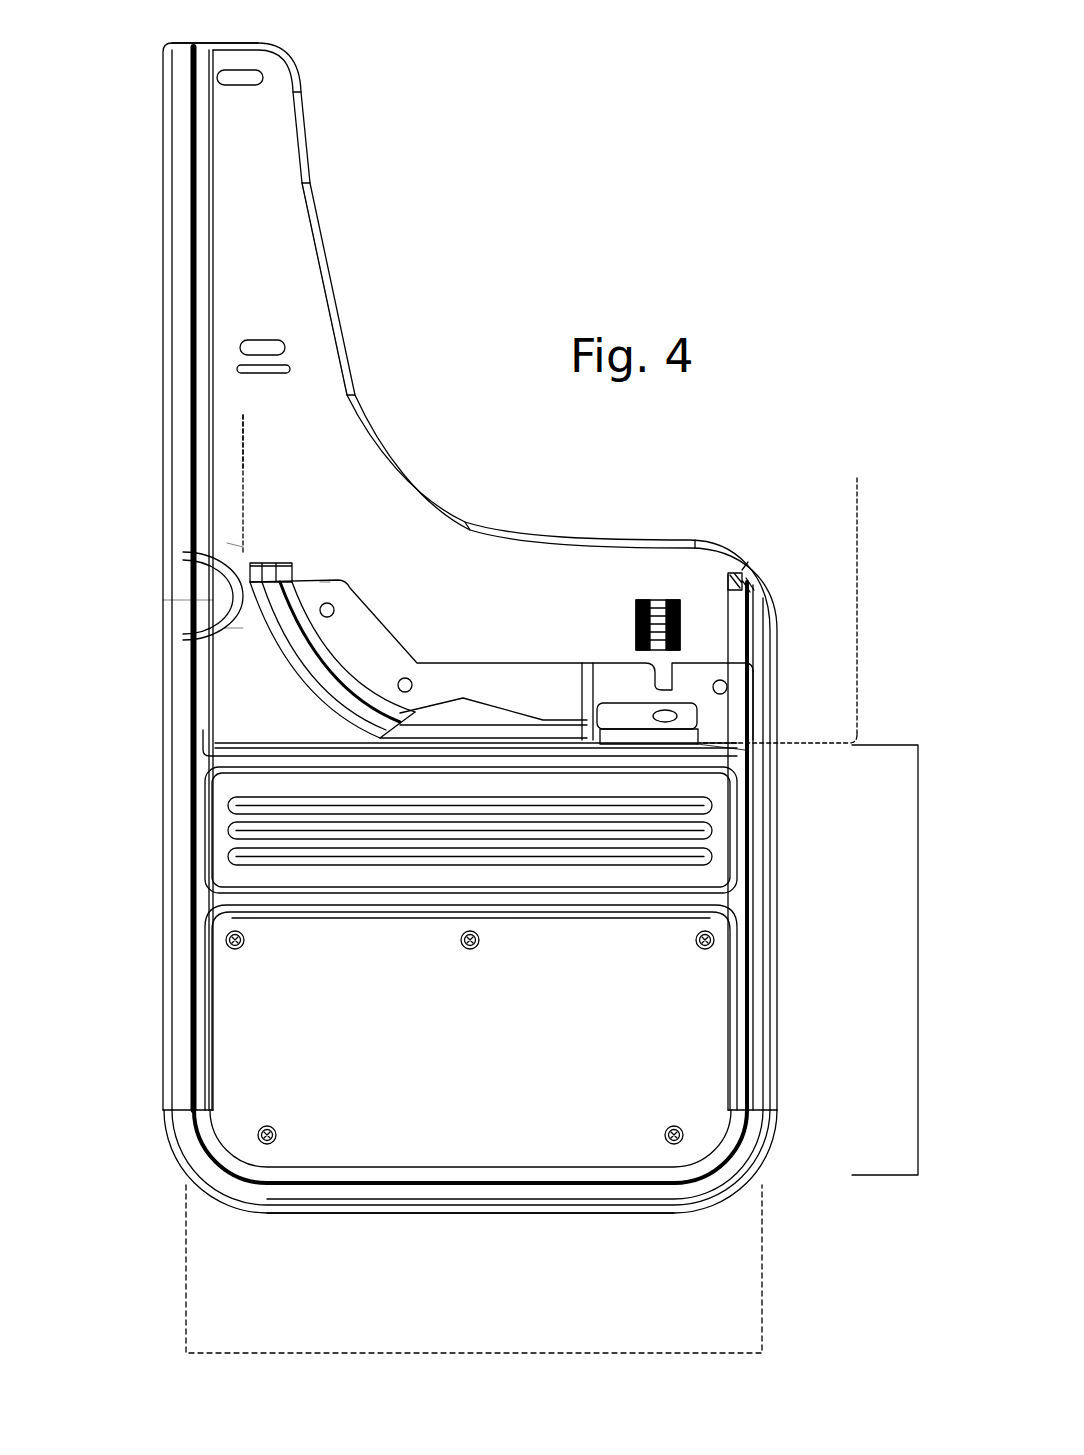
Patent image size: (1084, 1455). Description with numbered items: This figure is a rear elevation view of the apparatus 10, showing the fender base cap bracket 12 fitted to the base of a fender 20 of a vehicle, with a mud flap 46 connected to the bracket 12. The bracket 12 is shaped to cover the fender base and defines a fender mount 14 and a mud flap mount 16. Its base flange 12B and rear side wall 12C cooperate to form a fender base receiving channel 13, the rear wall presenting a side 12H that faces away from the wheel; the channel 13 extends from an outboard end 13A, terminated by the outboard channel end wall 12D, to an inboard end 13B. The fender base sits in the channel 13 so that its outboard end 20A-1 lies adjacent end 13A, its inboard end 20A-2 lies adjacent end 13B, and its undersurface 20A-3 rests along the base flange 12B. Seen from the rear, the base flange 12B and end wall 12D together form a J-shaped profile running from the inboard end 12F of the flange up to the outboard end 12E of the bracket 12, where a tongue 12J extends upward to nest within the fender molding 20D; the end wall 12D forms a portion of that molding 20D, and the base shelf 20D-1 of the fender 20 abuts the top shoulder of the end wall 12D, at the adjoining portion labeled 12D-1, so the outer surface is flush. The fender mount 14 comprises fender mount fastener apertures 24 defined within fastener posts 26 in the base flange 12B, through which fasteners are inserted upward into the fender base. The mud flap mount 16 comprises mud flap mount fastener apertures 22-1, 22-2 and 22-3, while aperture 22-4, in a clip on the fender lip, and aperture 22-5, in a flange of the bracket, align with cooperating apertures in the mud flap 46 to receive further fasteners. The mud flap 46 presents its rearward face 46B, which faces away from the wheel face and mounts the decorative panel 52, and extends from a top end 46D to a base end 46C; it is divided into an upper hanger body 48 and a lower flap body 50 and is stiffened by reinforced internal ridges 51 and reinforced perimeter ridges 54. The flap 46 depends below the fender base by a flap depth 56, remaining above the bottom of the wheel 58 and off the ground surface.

The apparatus 10 is at (650, 180).
The fender base cap bracket 12 is at (381, 680).
The base flange 12B is at (285, 717).
The rear side wall 12C is at (462, 712).
The outboard channel end wall 12D is at (250, 622).
The bracket flange edge 12D-1 is at (243, 557).
The outboard end of bracket 12E is at (262, 565).
The inboard end of base flange 12F is at (745, 752).
The side facing away from wheel side 12H is at (535, 700).
The tongue 12J is at (287, 575).
The fender base receiving channel 13 is at (405, 660).
The outboard end of channel 13A is at (333, 570).
The inboard end of channel 13B is at (760, 733).
The fender mount 14 is at (345, 635).
The mud flap mount 16 is at (688, 688).
The fender 20 is at (245, 470).
The outboard end of fender base 20A-1 is at (243, 520).
The inboard end of fender base 20A-2 is at (857, 640).
The undersurface of fender base 20A-3 is at (790, 750).
The fender molding 20D is at (243, 547).
The base shelf 20D-1 is at (243, 628).
The mud flap mount fastener aperture 22-1 is at (726, 683).
The fastener hole 22-2 is at (410, 680).
The fastener hole 22-3 is at (322, 616).
The aperture 22-4 is at (262, 333).
The aperture 22-5 is at (265, 80).
The fender mount fastener apertures 24 is at (628, 718).
The fastener posts 26 is at (605, 700).
The mud flap 46 is at (240, 1018).
The face facing away from wheel face 46B is at (228, 600).
The base end 46C is at (471, 1217).
The top end 46D is at (235, 30).
The upper hanger body 48 is at (257, 240).
The lower flap body 50 is at (163, 934).
The reinforced internal ridges 51 is at (235, 852).
The decorative panel 52 is at (508, 1060).
The reinforced perimeter ridges 54 is at (192, 1147).
The flap depth 56 is at (907, 960).
The wheel 58 is at (762, 1248).